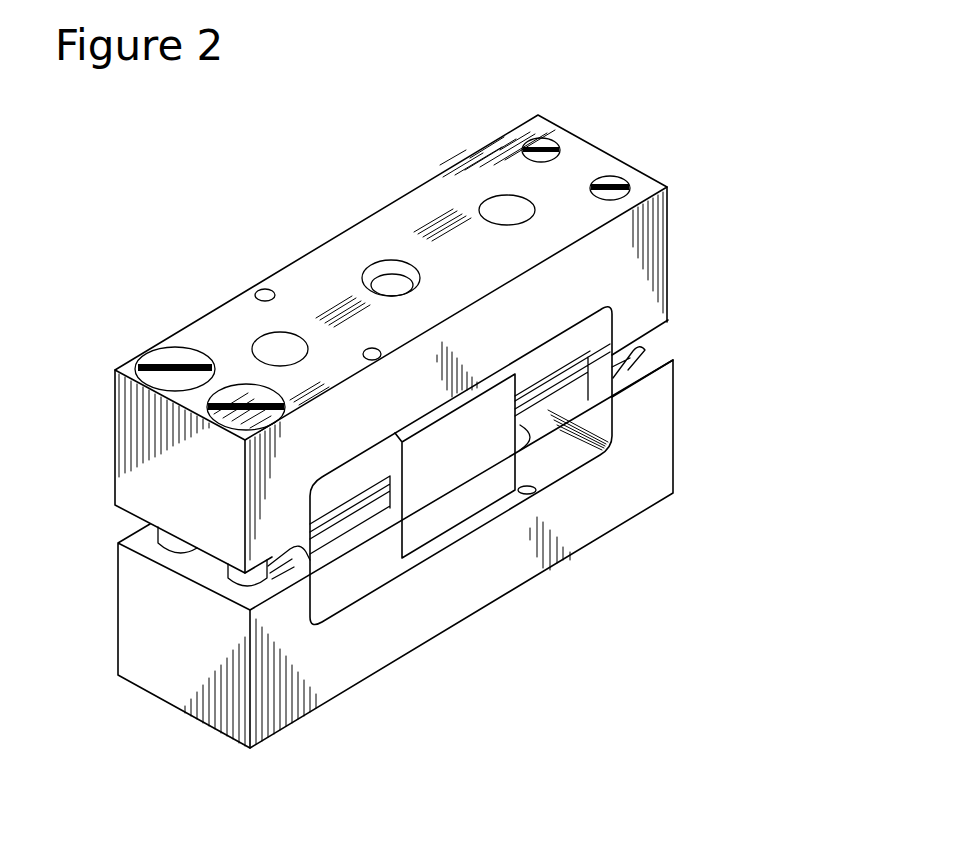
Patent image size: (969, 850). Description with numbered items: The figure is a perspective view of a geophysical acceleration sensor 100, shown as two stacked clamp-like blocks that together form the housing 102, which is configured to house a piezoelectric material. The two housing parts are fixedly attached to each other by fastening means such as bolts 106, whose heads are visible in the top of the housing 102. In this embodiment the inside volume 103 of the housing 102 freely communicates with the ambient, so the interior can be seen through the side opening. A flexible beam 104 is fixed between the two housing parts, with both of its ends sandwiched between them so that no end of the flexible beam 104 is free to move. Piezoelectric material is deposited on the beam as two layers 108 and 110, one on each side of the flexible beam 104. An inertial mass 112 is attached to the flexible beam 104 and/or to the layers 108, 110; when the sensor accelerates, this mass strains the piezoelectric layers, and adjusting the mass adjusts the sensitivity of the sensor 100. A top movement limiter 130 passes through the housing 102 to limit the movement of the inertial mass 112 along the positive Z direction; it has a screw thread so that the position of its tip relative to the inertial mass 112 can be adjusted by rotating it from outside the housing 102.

The geophysical acceleration sensor 100 is at (457, 49).
The housing 102 is at (660, 423).
The inside volume 103 is at (330, 572).
The flexible beam 104 is at (340, 523).
The bolts 106 is at (235, 402).
The layer of piezoelectric material 108 is at (543, 410).
The layer of piezoelectric material 110 is at (563, 383).
The inertial mass 112 is at (488, 435).
The top movement limiter 130 is at (390, 287).